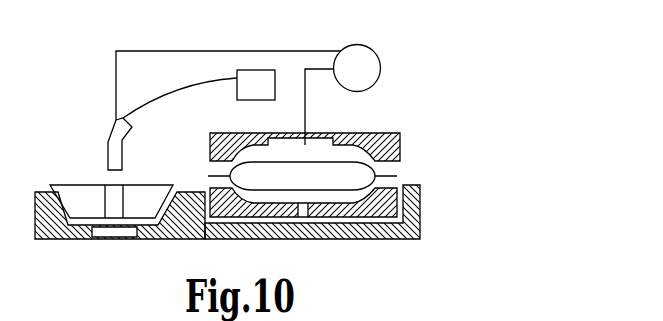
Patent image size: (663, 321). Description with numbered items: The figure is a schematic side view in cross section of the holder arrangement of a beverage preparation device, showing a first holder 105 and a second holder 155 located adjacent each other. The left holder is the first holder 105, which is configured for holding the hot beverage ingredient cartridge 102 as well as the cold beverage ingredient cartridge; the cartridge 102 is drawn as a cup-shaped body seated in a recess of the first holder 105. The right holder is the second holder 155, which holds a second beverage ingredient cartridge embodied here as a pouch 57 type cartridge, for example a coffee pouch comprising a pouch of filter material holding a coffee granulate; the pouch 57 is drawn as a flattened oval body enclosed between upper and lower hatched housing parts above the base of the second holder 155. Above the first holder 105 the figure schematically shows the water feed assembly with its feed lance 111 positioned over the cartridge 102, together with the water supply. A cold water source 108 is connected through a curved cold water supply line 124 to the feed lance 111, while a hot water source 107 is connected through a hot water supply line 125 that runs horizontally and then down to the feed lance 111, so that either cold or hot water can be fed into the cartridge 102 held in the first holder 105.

The pouch 57 is at (337, 182).
The hot beverage ingredient cartridge 102 is at (98, 207).
The first holder 105 is at (85, 161).
The hot water source 107 is at (348, 53).
The cold water source 108 is at (255, 87).
The feed lance 111 is at (122, 158).
The cold water supply line 124 is at (197, 86).
The hot water supply line 125 is at (152, 51).
The second holder 155 is at (411, 217).